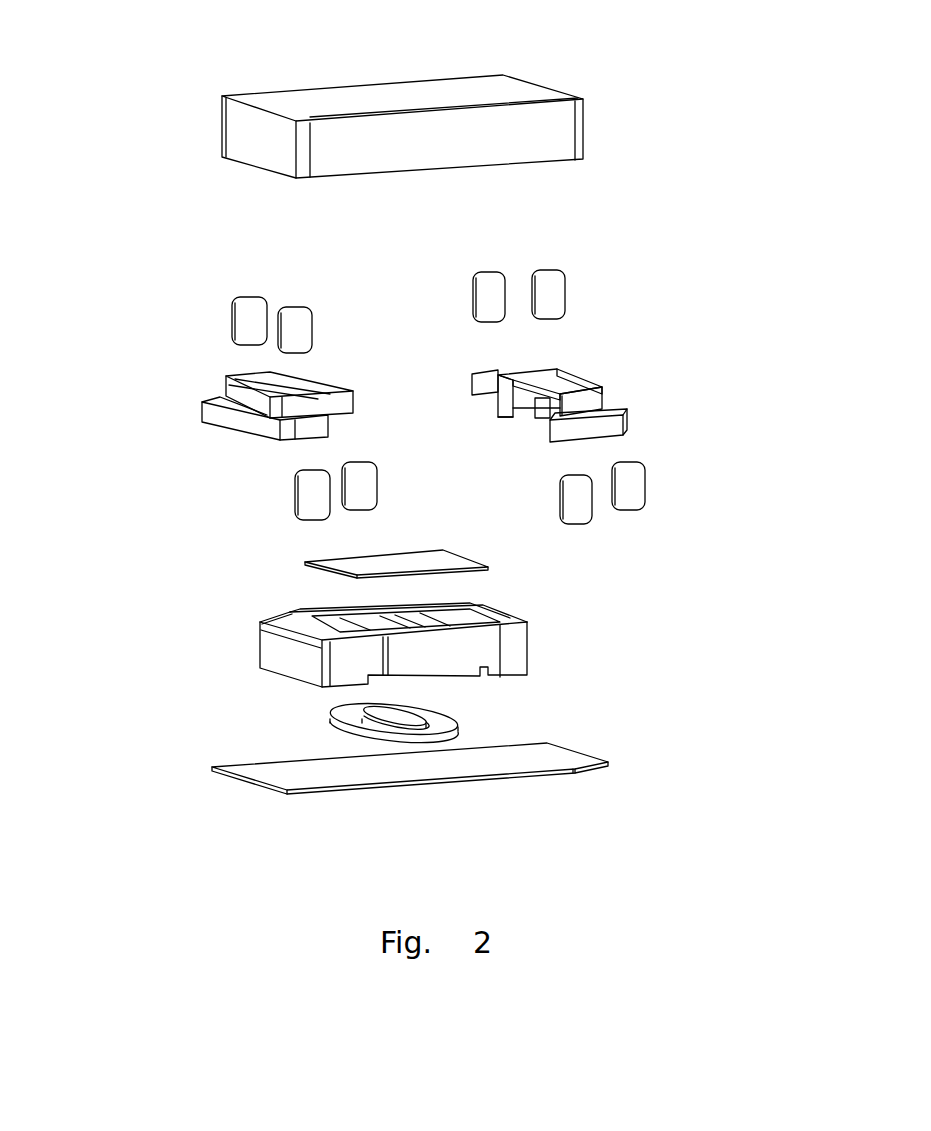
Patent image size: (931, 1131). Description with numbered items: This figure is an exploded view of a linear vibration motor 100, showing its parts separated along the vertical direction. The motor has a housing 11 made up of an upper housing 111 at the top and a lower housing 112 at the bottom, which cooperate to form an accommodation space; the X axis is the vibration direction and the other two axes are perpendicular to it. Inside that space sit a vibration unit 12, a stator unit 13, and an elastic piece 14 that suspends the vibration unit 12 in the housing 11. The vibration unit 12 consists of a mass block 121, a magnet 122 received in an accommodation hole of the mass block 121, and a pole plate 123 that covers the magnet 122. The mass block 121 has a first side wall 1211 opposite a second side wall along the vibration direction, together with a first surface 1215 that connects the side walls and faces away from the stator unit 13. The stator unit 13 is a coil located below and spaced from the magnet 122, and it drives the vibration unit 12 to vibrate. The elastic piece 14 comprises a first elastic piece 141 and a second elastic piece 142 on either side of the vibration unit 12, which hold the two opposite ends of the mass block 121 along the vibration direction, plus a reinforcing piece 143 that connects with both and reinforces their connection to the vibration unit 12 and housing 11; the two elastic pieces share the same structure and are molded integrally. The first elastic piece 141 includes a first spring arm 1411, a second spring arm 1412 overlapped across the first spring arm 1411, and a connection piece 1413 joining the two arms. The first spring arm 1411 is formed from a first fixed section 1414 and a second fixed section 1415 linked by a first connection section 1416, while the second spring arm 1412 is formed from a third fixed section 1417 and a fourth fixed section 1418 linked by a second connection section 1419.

The linear vibration motor 100 is at (432, 27).
The housing 11 is at (103, 687).
The upper housing 111 is at (225, 163).
The lower housing 112 is at (246, 753).
The vibration unit 12 is at (663, 553).
The mass block 121 is at (537, 663).
The first side wall 1211 is at (340, 665).
The first surface 1215 is at (290, 620).
The magnet 122 is at (413, 618).
The pole plate 123 is at (427, 559).
The stator unit 13 is at (440, 720).
The elastic piece 14 is at (780, 293).
The first elastic piece 141 is at (720, 332).
The first spring arm 1411 is at (587, 373).
The second spring arm 1412 is at (621, 411).
The connection piece 1413 is at (592, 385).
The first fixed section 1414 is at (500, 407).
The second fixed section 1415 is at (495, 382).
The first connection section 1416 is at (573, 378).
The third fixed section 1417 is at (513, 417).
The fourth fixed section 1418 is at (573, 437).
The second connection section 1419 is at (555, 415).
The second elastic piece 142 is at (340, 357).
The reinforcing piece 143 is at (622, 492).